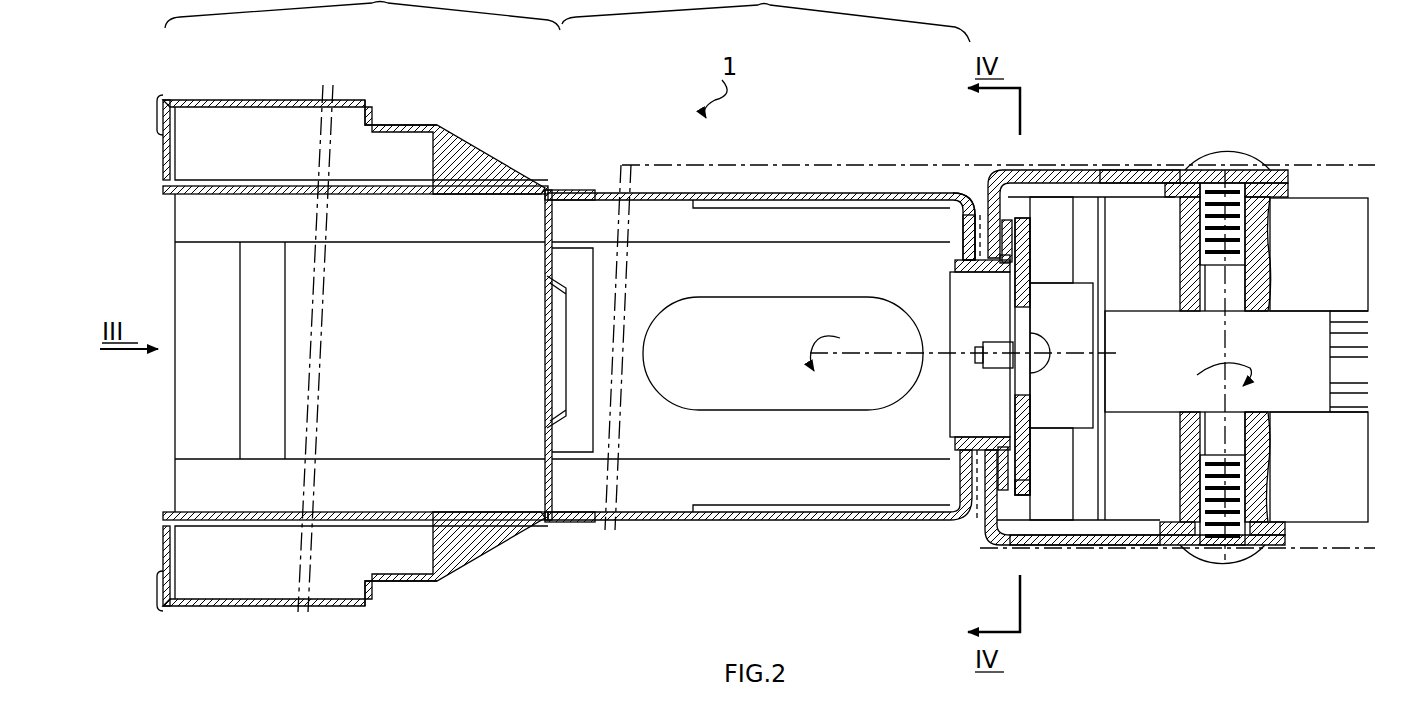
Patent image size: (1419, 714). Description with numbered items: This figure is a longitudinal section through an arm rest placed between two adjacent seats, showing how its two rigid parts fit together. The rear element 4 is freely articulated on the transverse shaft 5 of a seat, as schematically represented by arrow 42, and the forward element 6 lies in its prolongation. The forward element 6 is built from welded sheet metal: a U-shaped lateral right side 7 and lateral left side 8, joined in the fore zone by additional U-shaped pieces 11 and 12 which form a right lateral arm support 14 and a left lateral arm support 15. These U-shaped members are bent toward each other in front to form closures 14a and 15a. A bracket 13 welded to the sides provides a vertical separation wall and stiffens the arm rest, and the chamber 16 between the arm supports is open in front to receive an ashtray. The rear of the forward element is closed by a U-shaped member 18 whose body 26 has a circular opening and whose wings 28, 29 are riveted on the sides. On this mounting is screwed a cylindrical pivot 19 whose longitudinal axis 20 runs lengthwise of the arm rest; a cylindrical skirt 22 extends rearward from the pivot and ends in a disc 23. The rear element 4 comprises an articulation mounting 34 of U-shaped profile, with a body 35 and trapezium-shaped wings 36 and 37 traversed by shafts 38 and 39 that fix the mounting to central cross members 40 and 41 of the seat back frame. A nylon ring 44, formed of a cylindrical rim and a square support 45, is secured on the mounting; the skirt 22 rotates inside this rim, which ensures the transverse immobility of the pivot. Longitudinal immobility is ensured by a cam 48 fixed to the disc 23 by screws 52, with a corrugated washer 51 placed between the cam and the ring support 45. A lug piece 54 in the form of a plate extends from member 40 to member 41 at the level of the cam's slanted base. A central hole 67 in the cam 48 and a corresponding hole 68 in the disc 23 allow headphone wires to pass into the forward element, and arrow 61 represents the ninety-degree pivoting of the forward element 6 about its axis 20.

The first rear element 4 is at (1110, 168).
The transverse shaft 5 is at (1232, 339).
The second forward element 6 is at (799, 163).
The lateral right side 7 is at (244, 520).
The lateral left side 8 is at (240, 186).
The additional welded sheet metal piece 11 is at (252, 607).
The additional welded sheet metal piece 12 is at (258, 100).
The bracket 13 is at (566, 425).
The lateral arm support 14 is at (365, 568).
The closure 14a is at (225, 652).
The lateral arm support 15 is at (398, 172).
The closure 15a is at (160, 92).
The chamber 16 is at (422, 354).
The U-shaped member 18 is at (943, 211).
The cylindrical pivot 19 is at (953, 263).
The longitudinal axis 20 is at (890, 348).
The cylindrical skirt 22 is at (980, 272).
The disc 23 is at (1013, 422).
The body 26 is at (958, 478).
The wing 28 is at (905, 505).
The wing 29 is at (821, 222).
The articulation mounting 34 is at (1152, 173).
The body 35 is at (1003, 222).
The wing 36 is at (1118, 203).
The wing 37 is at (1103, 545).
The shaft 38 is at (1230, 155).
The shaft 39 is at (1222, 567).
The central cross member 40 is at (1320, 258).
The central cross member 41 is at (1325, 478).
The arrow 42 is at (1205, 368).
The ring 44 is at (1003, 262).
The support 45 is at (1010, 232).
The cam 48 is at (1040, 456).
The corrugated washer 51 is at (1024, 482).
The screw 52 is at (1042, 363).
The lug piece 54 is at (1085, 250).
The arrow 61 is at (834, 360).
The central hole 67 is at (1027, 320).
The hole 68 is at (1015, 378).